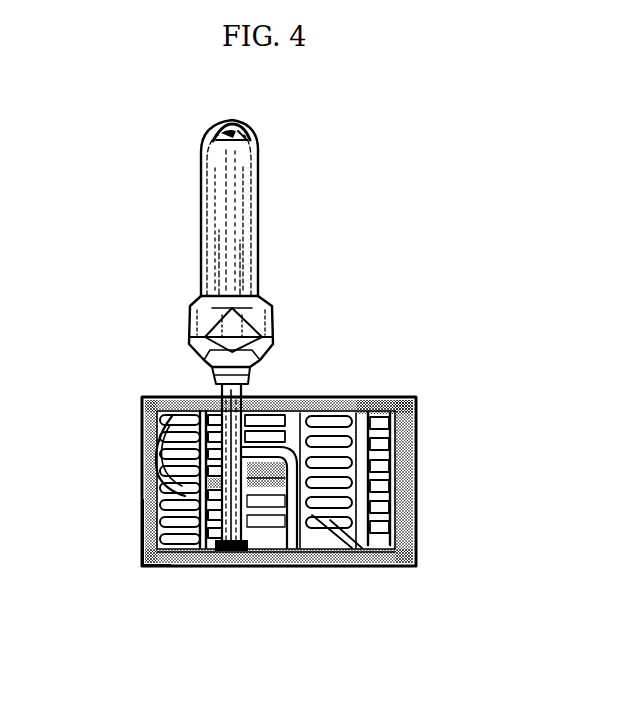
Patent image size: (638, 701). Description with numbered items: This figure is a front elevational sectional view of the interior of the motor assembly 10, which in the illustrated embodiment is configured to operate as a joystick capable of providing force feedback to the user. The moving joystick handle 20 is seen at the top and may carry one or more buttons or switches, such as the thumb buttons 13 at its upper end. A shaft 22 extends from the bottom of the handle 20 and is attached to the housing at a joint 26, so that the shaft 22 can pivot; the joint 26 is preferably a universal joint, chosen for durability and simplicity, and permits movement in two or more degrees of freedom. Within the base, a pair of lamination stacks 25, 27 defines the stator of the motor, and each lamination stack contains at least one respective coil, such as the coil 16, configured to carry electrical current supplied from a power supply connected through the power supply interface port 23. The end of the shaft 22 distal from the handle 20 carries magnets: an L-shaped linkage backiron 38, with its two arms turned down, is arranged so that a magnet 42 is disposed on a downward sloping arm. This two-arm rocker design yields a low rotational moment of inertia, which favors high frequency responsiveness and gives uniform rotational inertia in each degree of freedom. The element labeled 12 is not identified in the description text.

The motor assembly 10 is at (362, 176).
The housing 12 is at (345, 528).
The thumb buttons 13 is at (238, 126).
The coil 16 is at (156, 512).
The joystick handle 20 is at (259, 170).
The shaft 22 is at (244, 388).
The power supply interface port 23 is at (143, 446).
The lamination stack 25 is at (210, 398).
The joint 26 is at (236, 552).
The lamination stack 27 is at (357, 412).
The linkage backiron 38 is at (283, 552).
The magnet 42 is at (320, 553).